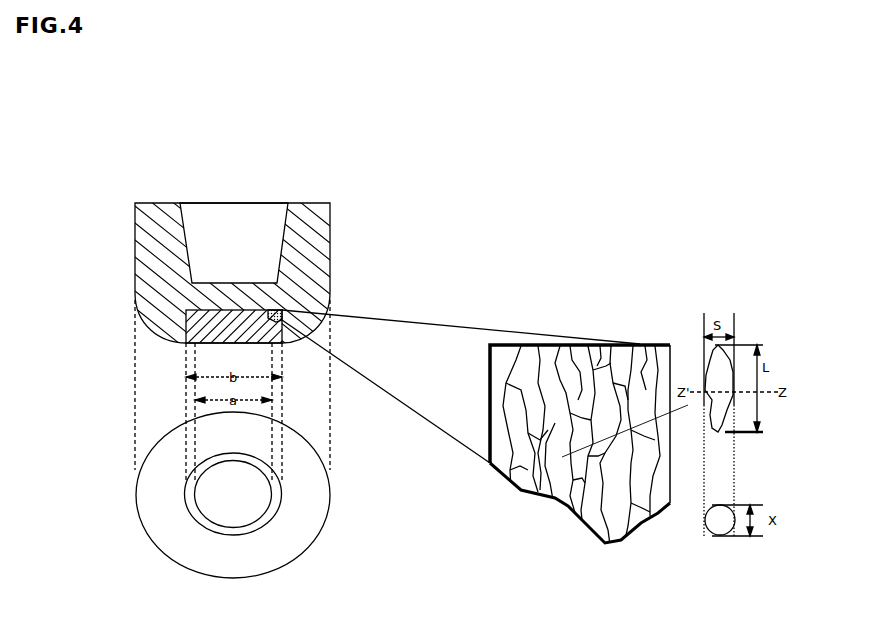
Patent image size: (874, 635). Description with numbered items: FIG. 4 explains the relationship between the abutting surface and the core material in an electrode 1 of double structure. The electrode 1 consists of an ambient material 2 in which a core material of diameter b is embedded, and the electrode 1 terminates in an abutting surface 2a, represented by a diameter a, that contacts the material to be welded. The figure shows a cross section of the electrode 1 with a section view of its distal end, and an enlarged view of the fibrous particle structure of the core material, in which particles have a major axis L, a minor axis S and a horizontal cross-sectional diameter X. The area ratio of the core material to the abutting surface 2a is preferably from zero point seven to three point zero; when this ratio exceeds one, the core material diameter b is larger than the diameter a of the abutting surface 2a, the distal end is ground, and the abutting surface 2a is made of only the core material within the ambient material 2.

The electrode 1 is at (269, 284).
The ambient material 2 is at (300, 290).
The abutting surface 2a is at (222, 345).